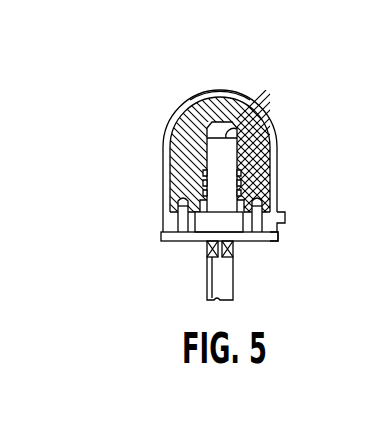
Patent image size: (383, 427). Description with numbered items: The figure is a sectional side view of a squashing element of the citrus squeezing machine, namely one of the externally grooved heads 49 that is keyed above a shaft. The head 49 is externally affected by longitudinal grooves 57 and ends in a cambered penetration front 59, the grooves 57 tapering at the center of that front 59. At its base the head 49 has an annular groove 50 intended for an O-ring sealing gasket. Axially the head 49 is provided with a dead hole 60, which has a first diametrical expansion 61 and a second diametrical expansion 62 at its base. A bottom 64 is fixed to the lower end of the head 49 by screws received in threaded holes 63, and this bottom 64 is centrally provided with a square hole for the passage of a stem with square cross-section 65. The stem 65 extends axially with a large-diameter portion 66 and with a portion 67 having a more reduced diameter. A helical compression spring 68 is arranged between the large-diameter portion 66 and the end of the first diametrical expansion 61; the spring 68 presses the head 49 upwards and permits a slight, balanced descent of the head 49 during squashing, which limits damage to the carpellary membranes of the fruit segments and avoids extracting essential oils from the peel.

The externally grooved head 49 is at (287, 188).
The annular groove 50 is at (272, 222).
The longitudinal grooves 57 is at (162, 147).
The cambered penetration front 59 is at (220, 90).
The dead hole 60 is at (222, 157).
The first diametrical expansion 61 is at (268, 153).
The second diametrical expansion 62 is at (255, 236).
The threaded holes 63 is at (172, 221).
The bottom 64 is at (279, 240).
The stem with square cross-section 65 is at (207, 248).
The large-diameter portion 66 is at (168, 243).
The reduced-diameter portion 67 is at (275, 133).
The helical compression spring 68 is at (279, 171).